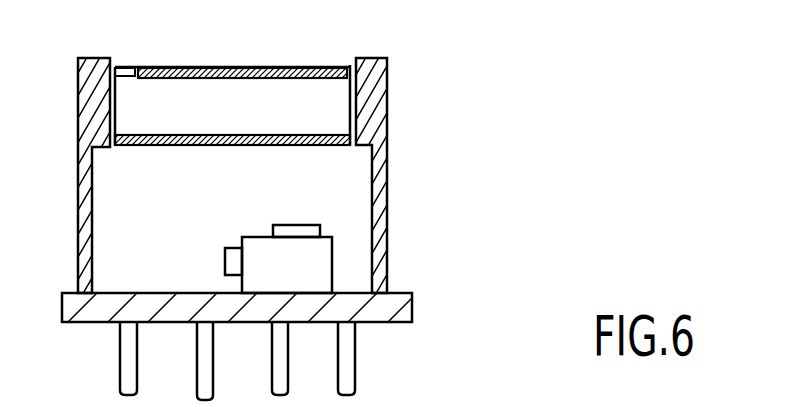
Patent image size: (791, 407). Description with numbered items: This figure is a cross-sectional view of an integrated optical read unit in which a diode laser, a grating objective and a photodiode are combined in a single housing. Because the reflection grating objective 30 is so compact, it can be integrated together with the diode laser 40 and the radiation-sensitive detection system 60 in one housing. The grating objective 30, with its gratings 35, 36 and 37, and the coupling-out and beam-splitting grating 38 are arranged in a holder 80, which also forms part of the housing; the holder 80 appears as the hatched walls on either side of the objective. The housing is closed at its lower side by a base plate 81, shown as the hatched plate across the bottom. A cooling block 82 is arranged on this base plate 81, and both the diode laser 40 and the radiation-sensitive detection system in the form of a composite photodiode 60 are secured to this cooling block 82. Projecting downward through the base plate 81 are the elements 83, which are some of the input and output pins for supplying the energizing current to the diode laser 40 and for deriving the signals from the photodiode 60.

The grating objective 30 is at (125, 103).
The grating 35 is at (240, 68).
The grating 36 is at (148, 147).
The grating 37 is at (171, 68).
The coupling-out and beam-splitting grating 38 is at (233, 148).
The diode laser 40 is at (232, 260).
The composite photodiode 60 is at (305, 227).
The holder 80 is at (88, 90).
The base plate 81 is at (415, 307).
The cooling block 82 is at (312, 265).
The input and output pins 83 is at (130, 368).